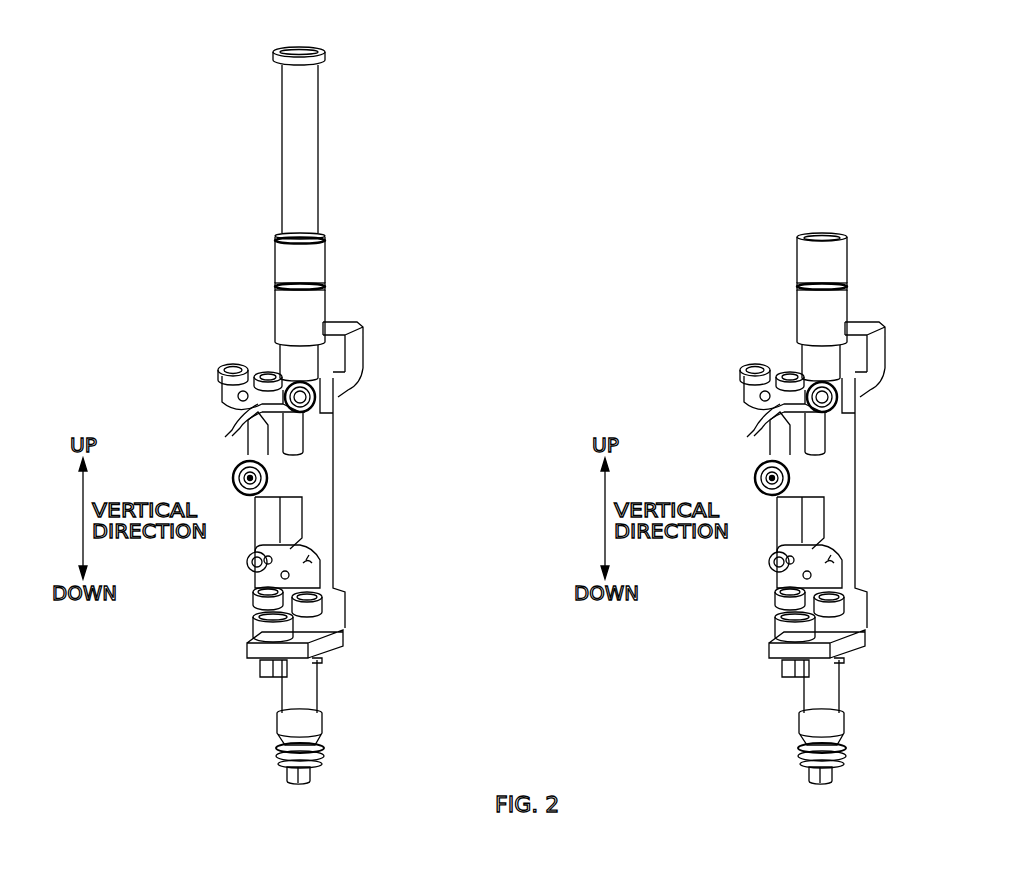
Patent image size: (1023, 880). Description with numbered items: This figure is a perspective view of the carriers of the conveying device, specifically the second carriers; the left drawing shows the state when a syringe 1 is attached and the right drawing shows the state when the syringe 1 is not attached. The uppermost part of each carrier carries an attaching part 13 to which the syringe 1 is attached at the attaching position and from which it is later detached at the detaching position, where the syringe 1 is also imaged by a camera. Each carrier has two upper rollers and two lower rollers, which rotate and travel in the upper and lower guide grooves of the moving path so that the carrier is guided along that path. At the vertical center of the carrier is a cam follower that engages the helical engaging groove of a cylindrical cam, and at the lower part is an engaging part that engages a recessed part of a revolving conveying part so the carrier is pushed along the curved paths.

The syringe 1 is at (310, 147).
The attaching part 13 is at (850, 254).